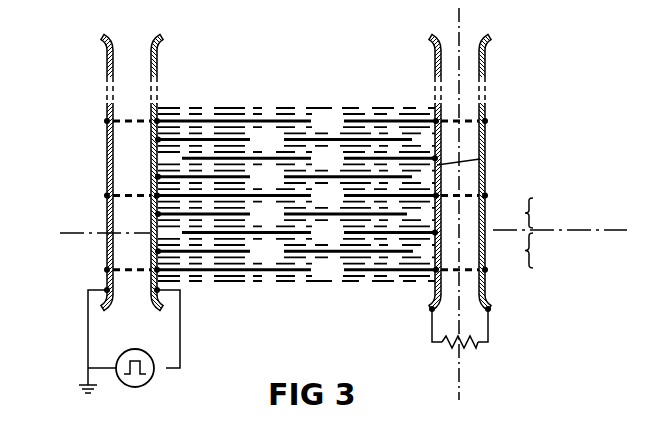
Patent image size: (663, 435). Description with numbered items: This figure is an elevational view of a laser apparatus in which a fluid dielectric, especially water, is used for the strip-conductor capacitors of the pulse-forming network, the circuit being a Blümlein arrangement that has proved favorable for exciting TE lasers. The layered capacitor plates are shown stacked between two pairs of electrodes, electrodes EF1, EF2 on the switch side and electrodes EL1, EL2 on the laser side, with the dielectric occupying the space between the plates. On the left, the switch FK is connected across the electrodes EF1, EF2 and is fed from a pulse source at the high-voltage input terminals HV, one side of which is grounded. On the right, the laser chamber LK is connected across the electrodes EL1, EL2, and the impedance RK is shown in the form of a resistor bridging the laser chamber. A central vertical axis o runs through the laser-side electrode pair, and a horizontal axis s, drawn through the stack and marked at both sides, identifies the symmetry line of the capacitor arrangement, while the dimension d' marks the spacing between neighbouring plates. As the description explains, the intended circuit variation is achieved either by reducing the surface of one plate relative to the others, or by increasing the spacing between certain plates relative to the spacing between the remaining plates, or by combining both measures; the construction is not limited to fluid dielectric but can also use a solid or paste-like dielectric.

The first field electrode EF1 is at (108, 61).
The second field electrode EF2 is at (157, 64).
The first load electrode EL1 is at (435, 58).
The second load electrode EL2 is at (486, 58).
The layer spacing d' is at (476, 154).
The symmetry axis s is at (617, 241).
The switch FK is at (129, 340).
The high-voltage input terminals HV is at (150, 381).
The laser chamber LK is at (460, 324).
The impedance RK is at (452, 347).
The central axis o is at (460, 386).